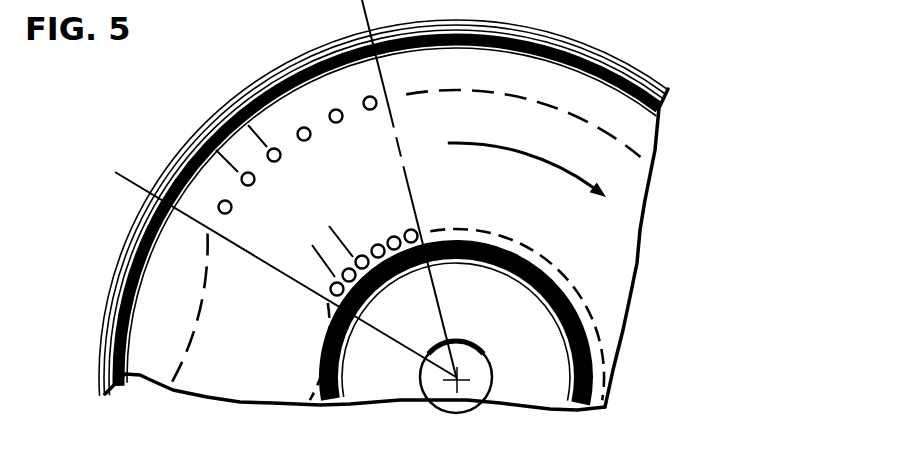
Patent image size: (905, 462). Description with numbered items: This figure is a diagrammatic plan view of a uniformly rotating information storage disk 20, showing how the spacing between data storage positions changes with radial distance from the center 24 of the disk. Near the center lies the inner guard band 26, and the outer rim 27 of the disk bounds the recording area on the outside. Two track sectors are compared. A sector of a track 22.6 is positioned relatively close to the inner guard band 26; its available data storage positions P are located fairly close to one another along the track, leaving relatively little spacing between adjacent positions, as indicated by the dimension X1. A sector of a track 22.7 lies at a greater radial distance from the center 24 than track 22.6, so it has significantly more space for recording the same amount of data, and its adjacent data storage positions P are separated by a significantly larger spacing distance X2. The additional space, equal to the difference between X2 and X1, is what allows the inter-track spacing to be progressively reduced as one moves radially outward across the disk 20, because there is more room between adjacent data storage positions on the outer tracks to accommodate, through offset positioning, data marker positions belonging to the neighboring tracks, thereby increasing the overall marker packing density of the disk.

The disk 20 is at (613, 110).
The rim 27 is at (110, 328).
The inner guard band 26 is at (333, 403).
The center 24 is at (457, 381).
The track 22.7 is at (441, 92).
The track 22.6 is at (460, 228).
The available data storage positions P is at (340, 125).
The spacing X1 is at (298, 273).
The spacing distance X2 is at (202, 185).